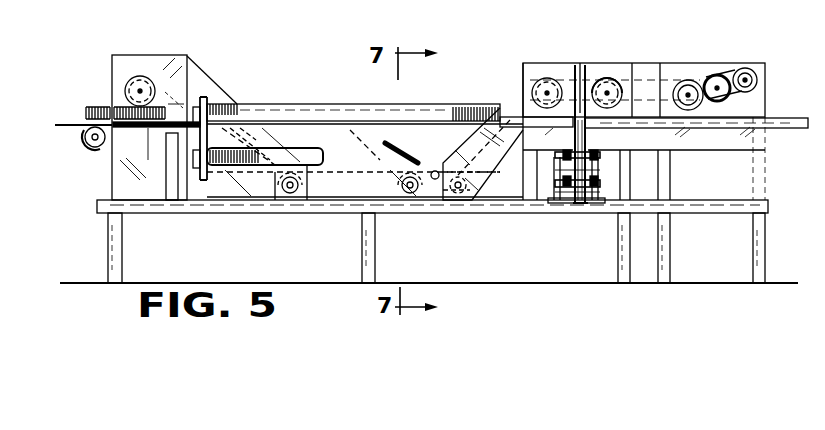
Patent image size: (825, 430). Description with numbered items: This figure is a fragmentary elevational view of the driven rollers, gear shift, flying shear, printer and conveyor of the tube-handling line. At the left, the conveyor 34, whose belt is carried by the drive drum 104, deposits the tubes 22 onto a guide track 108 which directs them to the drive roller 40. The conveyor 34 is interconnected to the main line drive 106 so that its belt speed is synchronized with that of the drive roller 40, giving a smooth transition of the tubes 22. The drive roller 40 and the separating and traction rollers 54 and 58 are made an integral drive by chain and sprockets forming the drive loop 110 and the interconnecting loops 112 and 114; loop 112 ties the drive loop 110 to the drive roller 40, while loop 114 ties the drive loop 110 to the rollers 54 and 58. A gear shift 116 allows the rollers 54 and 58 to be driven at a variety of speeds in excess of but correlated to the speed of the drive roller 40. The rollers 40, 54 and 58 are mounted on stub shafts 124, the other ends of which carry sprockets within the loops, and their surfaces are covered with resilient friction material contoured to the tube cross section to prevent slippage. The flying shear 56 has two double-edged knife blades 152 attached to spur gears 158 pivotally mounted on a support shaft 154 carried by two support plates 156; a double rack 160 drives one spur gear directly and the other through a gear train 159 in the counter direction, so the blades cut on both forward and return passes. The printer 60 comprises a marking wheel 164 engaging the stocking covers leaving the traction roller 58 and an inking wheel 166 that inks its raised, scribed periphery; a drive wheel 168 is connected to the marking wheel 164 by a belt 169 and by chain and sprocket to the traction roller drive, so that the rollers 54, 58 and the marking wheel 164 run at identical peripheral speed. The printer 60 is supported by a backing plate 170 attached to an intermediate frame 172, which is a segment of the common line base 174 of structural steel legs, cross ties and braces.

The tubes 22 is at (98, 108).
The conveyor 34 is at (75, 157).
The drive roller 40 is at (130, 84).
The separating and traction roller 54 is at (535, 80).
The flying shear 56 is at (565, 215).
The separating and traction roller 58 is at (607, 78).
The printer 60 is at (722, 44).
The drive drum 104 is at (84, 137).
The main line drive 106 is at (241, 77).
The guide track 108 is at (148, 130).
The drive loop 110 is at (363, 160).
The interconnecting loop 112 is at (200, 59).
The interconnecting loop 114 is at (472, 156).
The gear shift 116 is at (372, 141).
The stub shafts 124 is at (136, 92).
The knife blades 152 is at (580, 108).
The support shaft 154 is at (553, 163).
The support plates 156 is at (598, 200).
The spur gears 158 is at (592, 154).
The gear train 159 is at (550, 203).
The double rack 160 is at (590, 186).
The marking wheel 164 is at (680, 78).
The inking wheel 166 is at (712, 74).
The drive wheel 168 is at (751, 68).
The belt 169 is at (770, 103).
The backing plate 170 is at (768, 71).
The intermediate frame 172 is at (765, 170).
The line base 174 is at (772, 252).